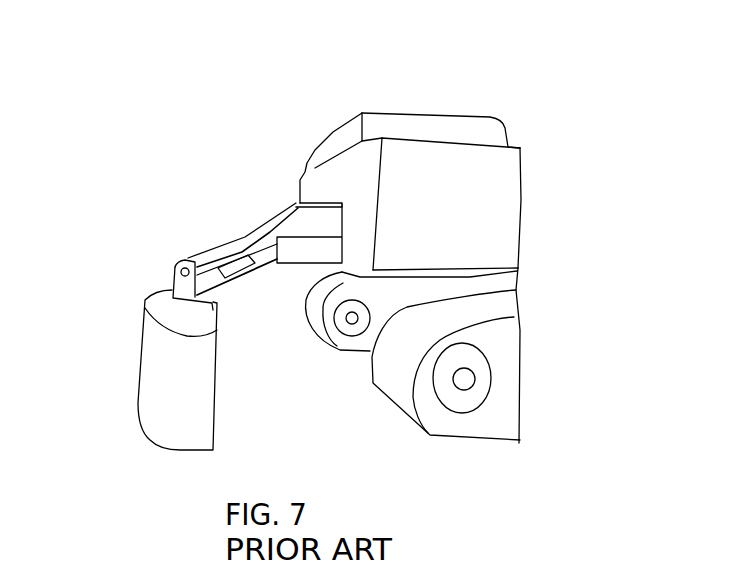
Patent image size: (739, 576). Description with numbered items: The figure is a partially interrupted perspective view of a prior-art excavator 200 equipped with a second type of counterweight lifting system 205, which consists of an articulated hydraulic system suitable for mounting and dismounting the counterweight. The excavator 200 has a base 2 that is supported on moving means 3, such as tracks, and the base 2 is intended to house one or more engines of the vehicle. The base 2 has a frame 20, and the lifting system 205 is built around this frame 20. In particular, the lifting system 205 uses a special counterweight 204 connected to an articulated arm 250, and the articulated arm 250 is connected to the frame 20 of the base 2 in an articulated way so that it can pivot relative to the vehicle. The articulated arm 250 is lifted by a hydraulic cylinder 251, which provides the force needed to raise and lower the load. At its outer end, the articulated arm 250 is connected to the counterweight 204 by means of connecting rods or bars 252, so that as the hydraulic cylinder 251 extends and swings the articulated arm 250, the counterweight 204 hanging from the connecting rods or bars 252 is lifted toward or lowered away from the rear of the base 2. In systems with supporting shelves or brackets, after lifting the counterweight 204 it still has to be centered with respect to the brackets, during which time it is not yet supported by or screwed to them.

The excavator 200 is at (535, 121).
The base 2 is at (455, 170).
The frame 20 is at (360, 173).
The moving means 3 is at (403, 363).
The lifting system 205 is at (250, 183).
The hydraulic cylinder 251 is at (255, 233).
The articulated arm 250 is at (263, 250).
The connecting rods or bars 252 is at (182, 278).
The counterweight 204 is at (170, 393).